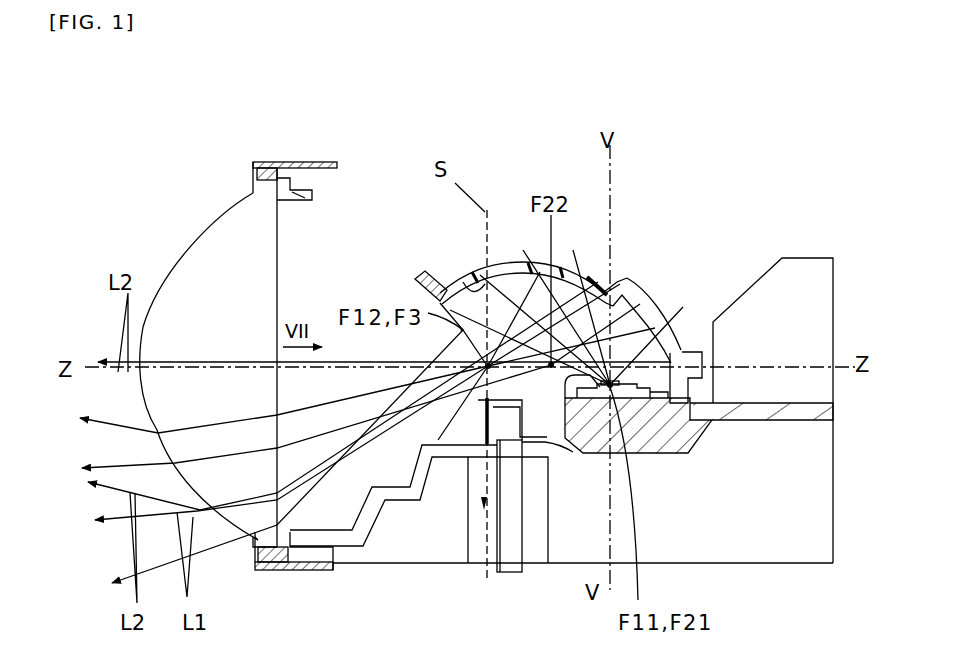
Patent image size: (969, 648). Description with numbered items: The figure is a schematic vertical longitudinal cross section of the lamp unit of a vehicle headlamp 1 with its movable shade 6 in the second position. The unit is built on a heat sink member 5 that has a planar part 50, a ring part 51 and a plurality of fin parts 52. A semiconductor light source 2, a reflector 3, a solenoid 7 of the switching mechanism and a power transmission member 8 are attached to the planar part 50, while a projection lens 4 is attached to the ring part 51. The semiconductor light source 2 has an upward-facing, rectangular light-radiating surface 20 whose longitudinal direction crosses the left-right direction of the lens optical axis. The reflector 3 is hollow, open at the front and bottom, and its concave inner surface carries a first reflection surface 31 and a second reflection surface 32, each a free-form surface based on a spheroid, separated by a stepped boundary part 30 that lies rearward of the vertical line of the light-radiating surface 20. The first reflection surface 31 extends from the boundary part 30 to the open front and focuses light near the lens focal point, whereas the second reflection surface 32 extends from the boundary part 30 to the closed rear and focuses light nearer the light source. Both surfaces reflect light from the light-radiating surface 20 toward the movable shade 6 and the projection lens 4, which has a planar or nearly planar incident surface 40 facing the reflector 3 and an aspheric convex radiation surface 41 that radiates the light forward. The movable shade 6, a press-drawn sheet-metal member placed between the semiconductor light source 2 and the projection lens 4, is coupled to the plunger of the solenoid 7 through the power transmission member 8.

The vehicle headlamp 1 is at (691, 158).
The semiconductor light source 2 is at (628, 400).
The reflector 3 is at (570, 292).
The projection lens 4 is at (235, 354).
The heat sink member 5 is at (701, 402).
The movable shade 6 is at (445, 460).
The solenoid 7 is at (467, 540).
The power transmission member 8 is at (507, 572).
The light-radiating surface 20 is at (570, 417).
The boundary part 30 is at (640, 290).
The first reflection surface 31 is at (462, 276).
The second reflection surface 32 is at (671, 360).
The incident surface 40 is at (278, 252).
The radiation surface 41 is at (175, 267).
The planar part 50 is at (688, 420).
The ring part 51 is at (278, 167).
The fin parts 52 is at (800, 277).